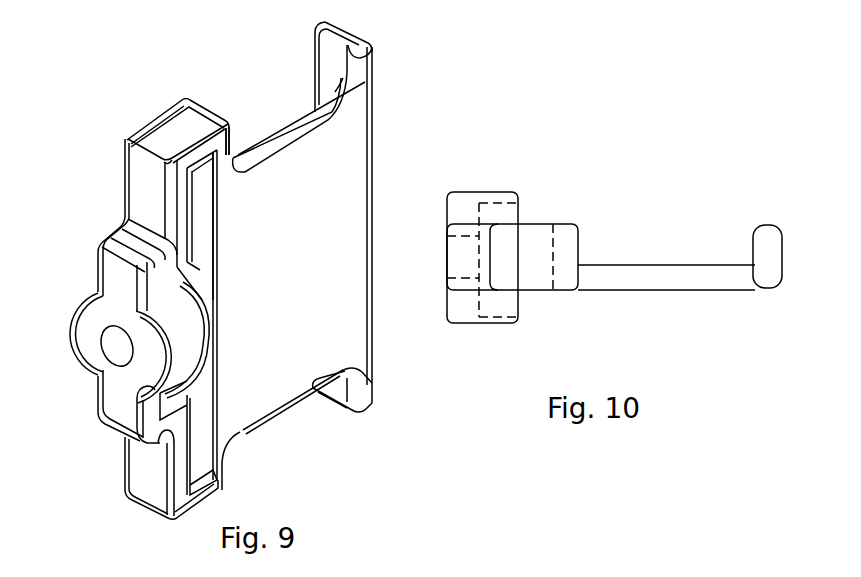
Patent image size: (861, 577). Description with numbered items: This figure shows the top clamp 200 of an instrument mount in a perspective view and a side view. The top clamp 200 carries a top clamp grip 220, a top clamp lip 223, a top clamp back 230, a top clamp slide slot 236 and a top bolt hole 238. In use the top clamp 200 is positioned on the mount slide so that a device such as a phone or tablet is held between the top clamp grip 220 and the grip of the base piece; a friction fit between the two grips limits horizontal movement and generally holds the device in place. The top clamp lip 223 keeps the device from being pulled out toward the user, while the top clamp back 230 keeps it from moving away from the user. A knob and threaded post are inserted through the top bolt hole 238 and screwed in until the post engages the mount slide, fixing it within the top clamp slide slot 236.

In FIG. 9, the top clamp 200 is at (331, 265).
In FIG. 10, the top clamp 200 is at (512, 257).
In FIG. 9, the top clamp grip 220 is at (310, 108).
In FIG. 10, the top clamp grip 220 is at (667, 277).
In FIG. 9, the top clamp lip 223 is at (353, 42).
In FIG. 10, the top clamp lip 223 is at (753, 247).
In FIG. 9, the top clamp back 230 is at (231, 124).
In FIG. 10, the top clamp back 230 is at (620, 576).
In FIG. 9, the top clamp slide slot 236 is at (204, 236).
In FIG. 9, the top bolt hole 238 is at (113, 348).